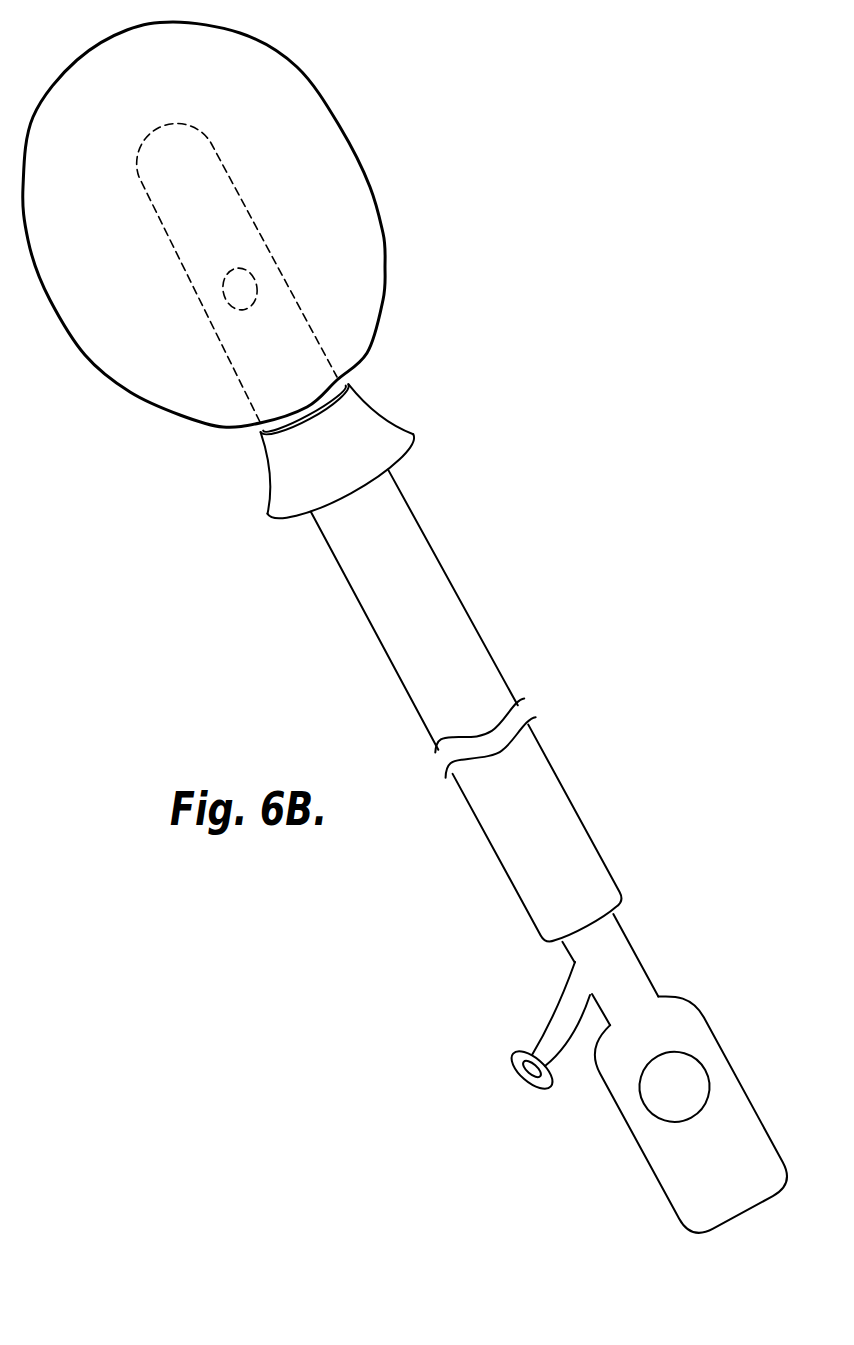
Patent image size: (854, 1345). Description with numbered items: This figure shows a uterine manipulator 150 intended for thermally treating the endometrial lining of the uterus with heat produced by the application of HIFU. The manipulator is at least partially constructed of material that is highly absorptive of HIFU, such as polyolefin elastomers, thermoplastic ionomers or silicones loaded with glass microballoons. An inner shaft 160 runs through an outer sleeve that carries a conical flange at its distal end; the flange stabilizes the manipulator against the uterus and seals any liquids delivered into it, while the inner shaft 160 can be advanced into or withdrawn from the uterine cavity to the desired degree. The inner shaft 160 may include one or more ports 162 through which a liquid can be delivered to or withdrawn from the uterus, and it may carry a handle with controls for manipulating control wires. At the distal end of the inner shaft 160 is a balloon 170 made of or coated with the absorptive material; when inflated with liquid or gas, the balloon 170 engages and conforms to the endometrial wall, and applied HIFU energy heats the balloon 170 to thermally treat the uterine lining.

The uterine manipulator 150 is at (478, 496).
The inner shaft 160 is at (253, 222).
The port opening 162 is at (253, 288).
The balloon 170 is at (297, 67).